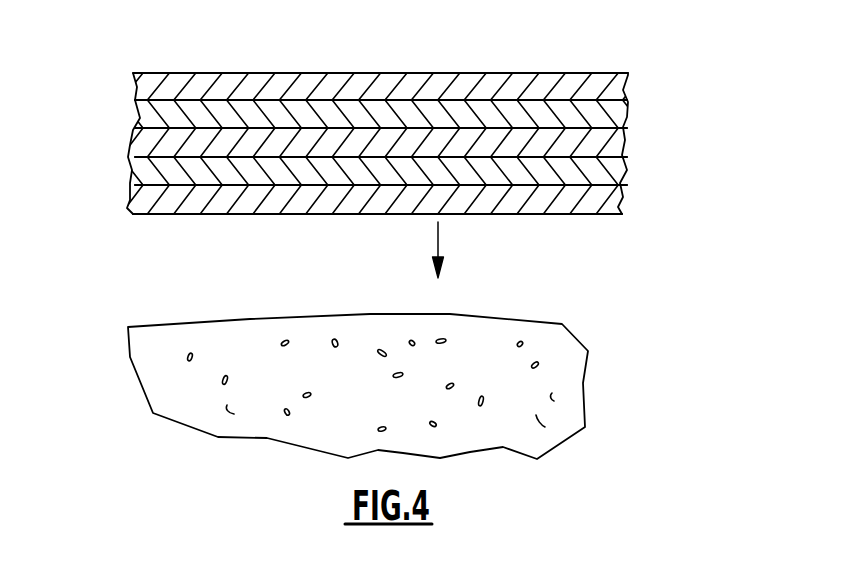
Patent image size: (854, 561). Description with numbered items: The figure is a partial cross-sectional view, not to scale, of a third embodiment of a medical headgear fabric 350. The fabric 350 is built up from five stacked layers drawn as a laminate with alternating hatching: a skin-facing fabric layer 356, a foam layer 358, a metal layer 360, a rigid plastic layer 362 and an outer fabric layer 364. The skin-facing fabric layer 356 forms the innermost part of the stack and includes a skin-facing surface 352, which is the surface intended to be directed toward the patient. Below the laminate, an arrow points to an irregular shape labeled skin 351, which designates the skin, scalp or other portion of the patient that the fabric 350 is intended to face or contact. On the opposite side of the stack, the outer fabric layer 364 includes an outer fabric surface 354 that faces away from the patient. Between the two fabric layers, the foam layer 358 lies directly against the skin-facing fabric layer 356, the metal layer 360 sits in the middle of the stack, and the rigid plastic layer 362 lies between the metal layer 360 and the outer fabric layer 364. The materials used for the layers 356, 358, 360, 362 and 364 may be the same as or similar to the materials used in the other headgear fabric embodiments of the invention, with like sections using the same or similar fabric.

The medical headgear fabric 350 is at (424, 144).
The skin 351 is at (584, 388).
The skin-facing surface 352 is at (268, 214).
The outer fabric surface 354 is at (326, 73).
The skin-facing fabric layer 356 is at (620, 199).
The foam layer 358 is at (132, 174).
The metal layer 360 is at (625, 142).
The rigid plastic layer 362 is at (135, 117).
The outer fabric layer 364 is at (625, 88).